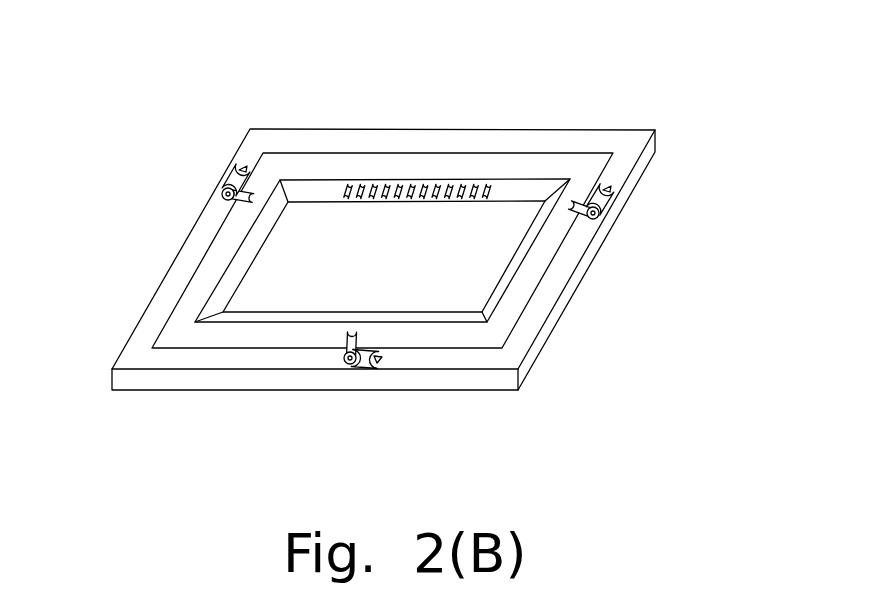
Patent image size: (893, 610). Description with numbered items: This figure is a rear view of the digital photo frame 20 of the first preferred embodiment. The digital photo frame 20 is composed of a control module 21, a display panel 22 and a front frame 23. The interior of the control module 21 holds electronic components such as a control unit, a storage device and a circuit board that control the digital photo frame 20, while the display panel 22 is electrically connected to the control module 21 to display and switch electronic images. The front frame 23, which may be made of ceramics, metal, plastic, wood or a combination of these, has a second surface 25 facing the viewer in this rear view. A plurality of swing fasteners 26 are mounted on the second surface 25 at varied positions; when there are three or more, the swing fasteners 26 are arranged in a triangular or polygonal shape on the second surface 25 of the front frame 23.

The digital photo frame 20 is at (215, 63).
The control module 21 is at (273, 290).
The display panel 22 is at (525, 278).
The front frame 23 is at (532, 368).
The second surface 25 is at (633, 150).
The swing fastener 26 is at (235, 178).